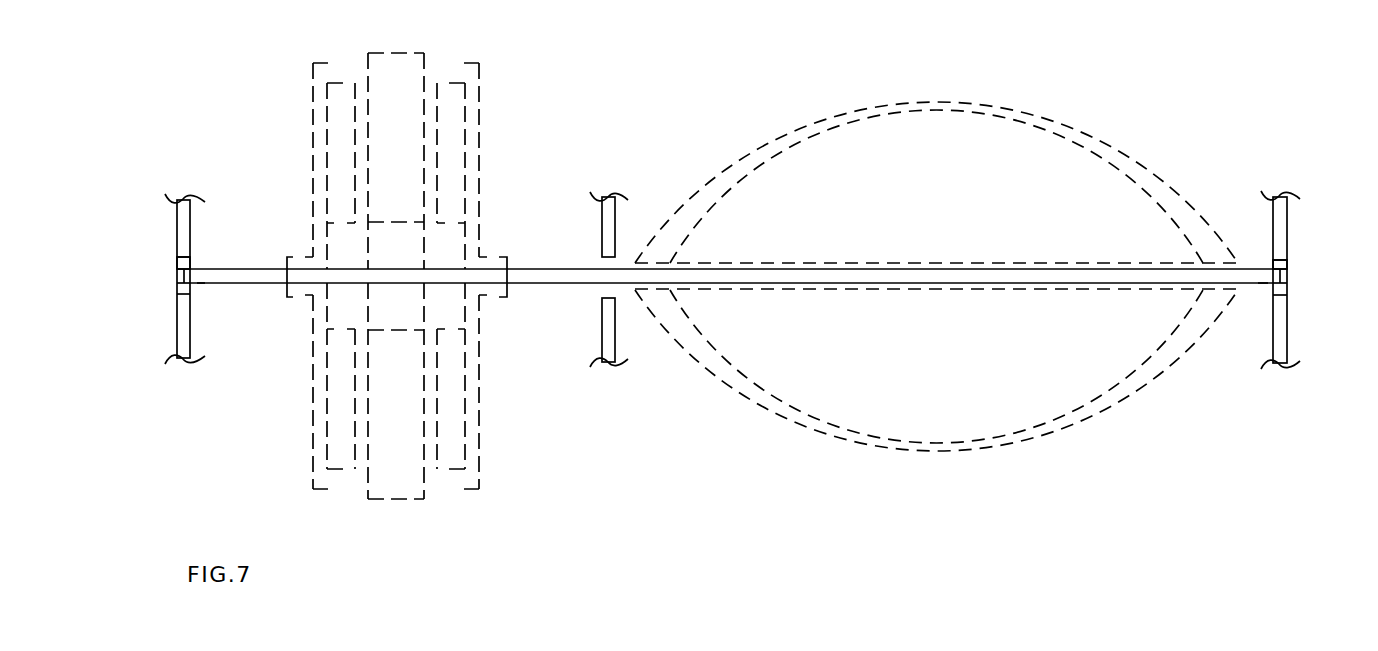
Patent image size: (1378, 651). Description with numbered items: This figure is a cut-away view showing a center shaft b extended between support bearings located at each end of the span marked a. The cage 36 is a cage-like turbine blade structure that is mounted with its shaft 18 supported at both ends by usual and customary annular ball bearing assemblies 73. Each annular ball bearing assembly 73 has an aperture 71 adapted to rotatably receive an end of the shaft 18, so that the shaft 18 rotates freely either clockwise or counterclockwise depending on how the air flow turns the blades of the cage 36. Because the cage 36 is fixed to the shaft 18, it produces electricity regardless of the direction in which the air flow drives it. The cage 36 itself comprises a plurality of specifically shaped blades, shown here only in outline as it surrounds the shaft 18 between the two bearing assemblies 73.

The shaft 18 is at (578, 277).
The cage 36 is at (1121, 389).
The aperture 71 is at (180, 280).
The annular ball bearing assembly 73 is at (185, 266).
The end point of shaft span a is at (186, 275).
The center shaft b is at (199, 284).